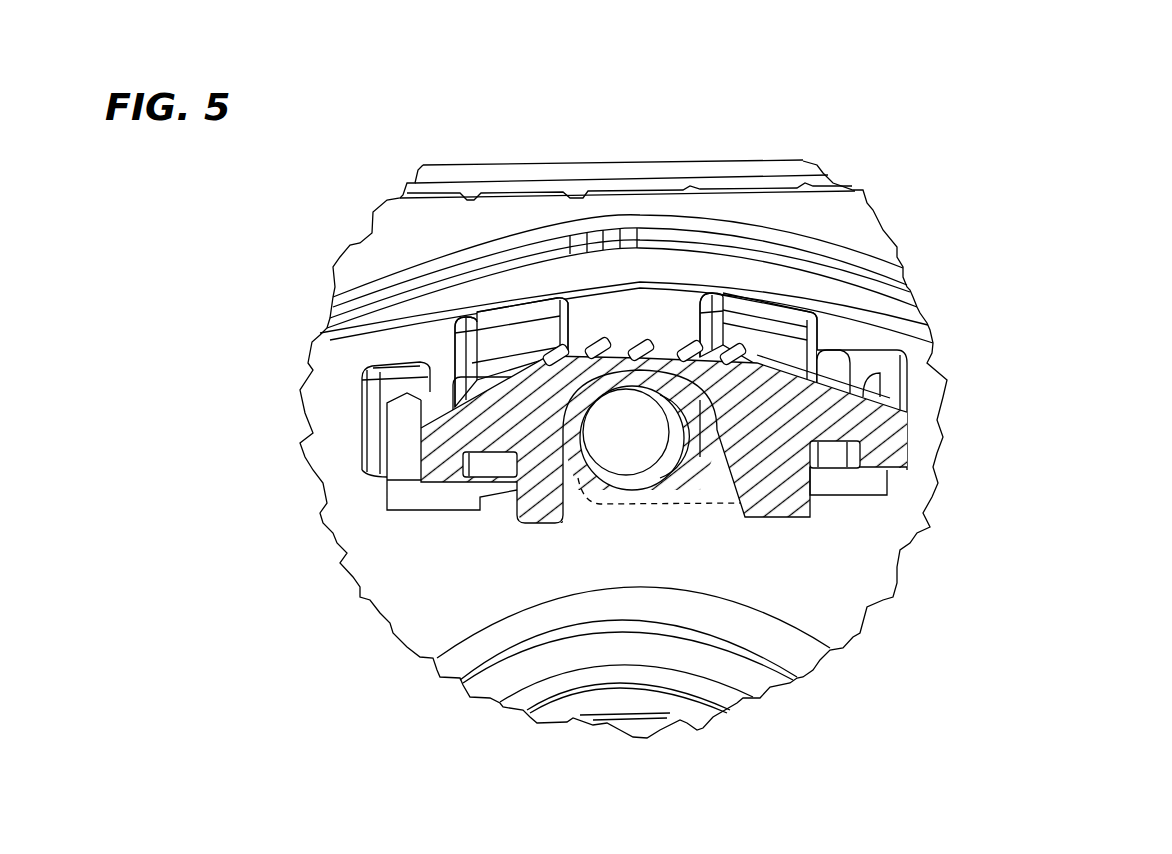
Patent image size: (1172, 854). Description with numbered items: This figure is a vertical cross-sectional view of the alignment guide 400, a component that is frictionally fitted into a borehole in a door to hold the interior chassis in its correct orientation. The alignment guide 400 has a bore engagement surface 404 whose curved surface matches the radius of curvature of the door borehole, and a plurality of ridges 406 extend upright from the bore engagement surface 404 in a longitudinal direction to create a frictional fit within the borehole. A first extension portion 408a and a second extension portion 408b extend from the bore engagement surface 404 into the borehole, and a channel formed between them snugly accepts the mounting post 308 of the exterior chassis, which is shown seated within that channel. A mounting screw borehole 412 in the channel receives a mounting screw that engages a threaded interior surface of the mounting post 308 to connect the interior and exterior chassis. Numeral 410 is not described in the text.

The mounting post 308 is at (763, 520).
The alignment guide 400 is at (900, 410).
The bore engagement surface 404 is at (712, 360).
The plurality of ridges 406 is at (552, 354).
The first extension portion 408a is at (480, 377).
The second extension portion 408b is at (880, 425).
The ribs 410 is at (630, 327).
The mounting screw borehole 412 is at (620, 442).